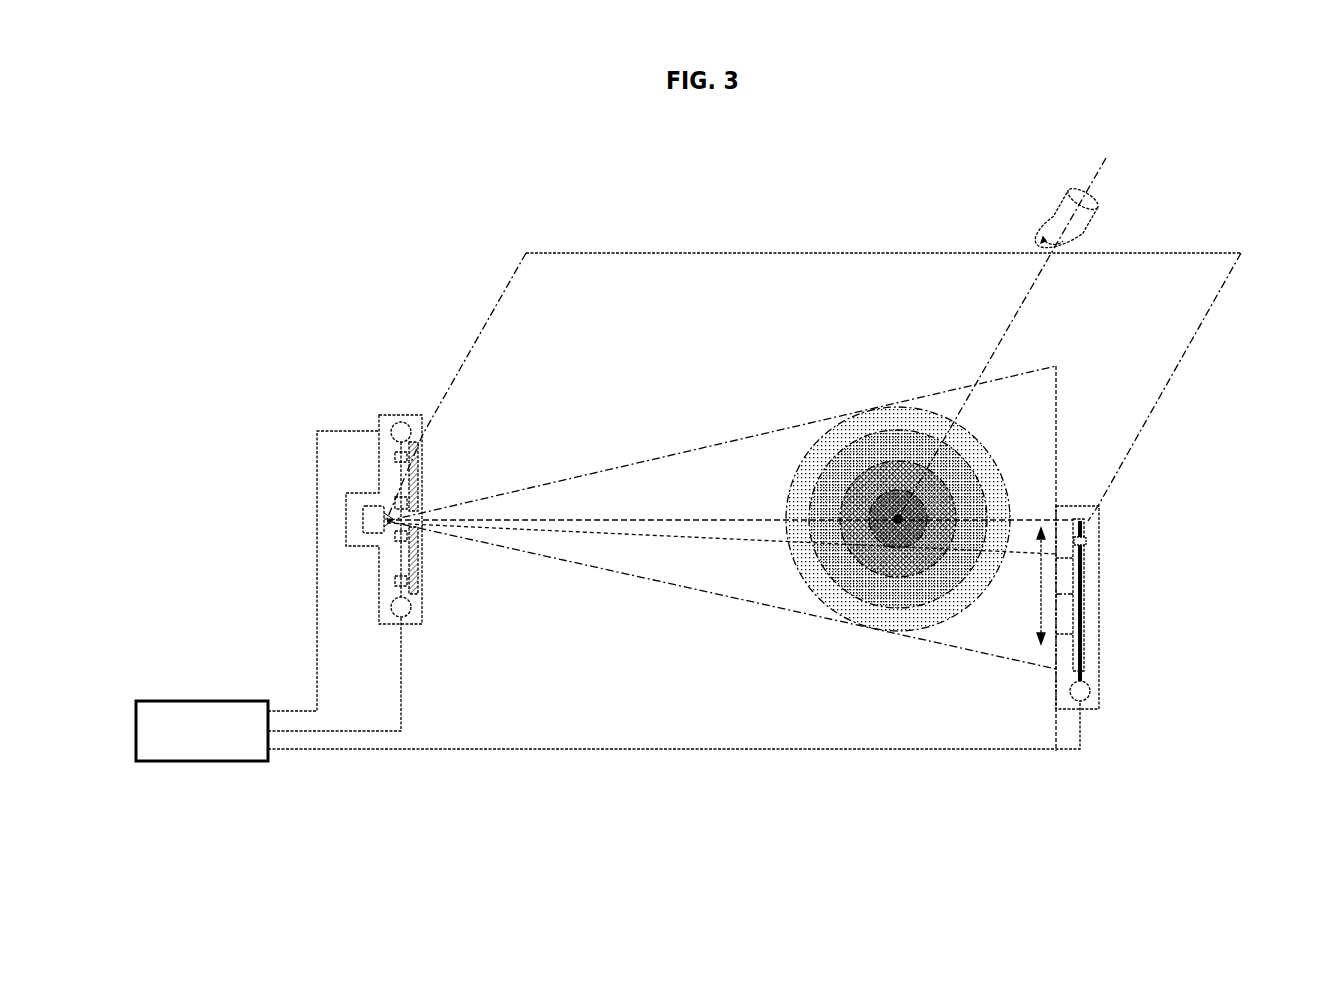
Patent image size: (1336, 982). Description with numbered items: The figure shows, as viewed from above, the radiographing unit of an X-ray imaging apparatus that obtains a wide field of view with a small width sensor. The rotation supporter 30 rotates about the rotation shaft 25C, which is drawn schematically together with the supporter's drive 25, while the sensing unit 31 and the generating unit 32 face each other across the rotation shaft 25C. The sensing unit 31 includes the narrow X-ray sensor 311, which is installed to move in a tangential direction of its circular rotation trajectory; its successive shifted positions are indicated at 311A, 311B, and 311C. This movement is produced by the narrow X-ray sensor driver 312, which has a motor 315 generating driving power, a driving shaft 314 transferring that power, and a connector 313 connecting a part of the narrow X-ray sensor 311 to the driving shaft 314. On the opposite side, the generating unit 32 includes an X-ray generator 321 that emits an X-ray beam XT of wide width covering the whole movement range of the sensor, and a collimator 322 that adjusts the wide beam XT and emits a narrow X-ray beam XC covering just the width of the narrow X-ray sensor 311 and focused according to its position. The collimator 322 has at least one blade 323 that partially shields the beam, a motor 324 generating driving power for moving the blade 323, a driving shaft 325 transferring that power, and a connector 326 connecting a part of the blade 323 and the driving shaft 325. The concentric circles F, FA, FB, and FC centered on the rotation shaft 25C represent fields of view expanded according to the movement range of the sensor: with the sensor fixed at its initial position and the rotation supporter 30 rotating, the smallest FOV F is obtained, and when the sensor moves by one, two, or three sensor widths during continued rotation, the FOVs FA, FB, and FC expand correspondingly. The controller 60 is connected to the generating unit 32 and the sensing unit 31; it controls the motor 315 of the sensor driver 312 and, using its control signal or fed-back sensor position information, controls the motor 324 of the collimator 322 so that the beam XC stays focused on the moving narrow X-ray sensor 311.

The rotation supporter 30 is at (853, 250).
The spindle 25 is at (1097, 205).
The rotation shaft 25C is at (895, 510).
The generating unit 32 is at (393, 472).
The X-ray generator 321 is at (362, 519).
The collimator 322 is at (344, 469).
The blade 323 is at (398, 490).
The motor 324 is at (400, 420).
The driving shaft 325 is at (408, 472).
The connector 326 is at (394, 456).
The sensing unit 31 is at (1086, 597).
The narrow X-ray sensor 311 is at (1080, 505).
The narrow X-ray sensor position 311A is at (1055, 600).
The second sensor region 311B is at (1055, 640).
The third sensor region 311C is at (1055, 650).
The narrow X-ray sensor driver 312 is at (1169, 611).
The connector 313 is at (1085, 540).
The driving shaft 314 is at (1085, 566).
The motor 315 is at (1092, 690).
The controller 60 is at (240, 700).
The X-ray beam with wide width XT is at (688, 446).
The X-ray beam with narrow width XC is at (600, 530).
The smallest FOV F is at (845, 560).
The FOV FA is at (862, 575).
The FOV FB is at (860, 585).
The FOV FC is at (920, 625).